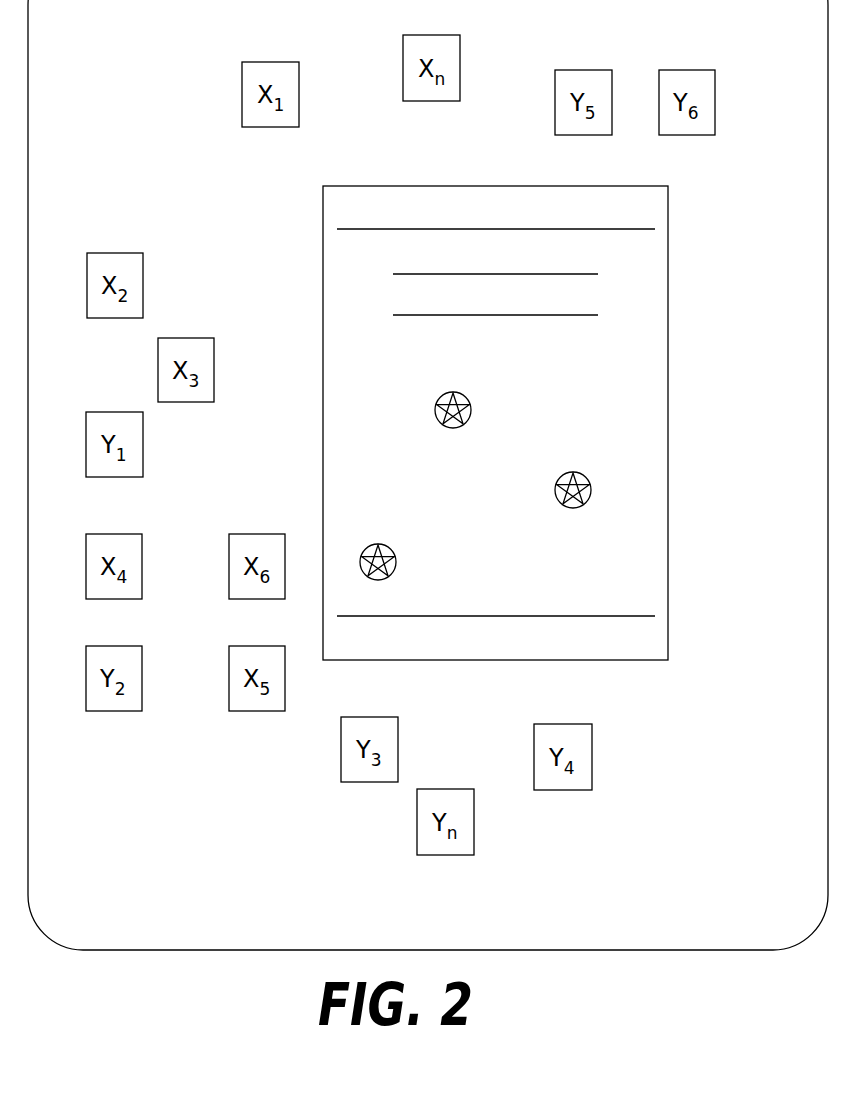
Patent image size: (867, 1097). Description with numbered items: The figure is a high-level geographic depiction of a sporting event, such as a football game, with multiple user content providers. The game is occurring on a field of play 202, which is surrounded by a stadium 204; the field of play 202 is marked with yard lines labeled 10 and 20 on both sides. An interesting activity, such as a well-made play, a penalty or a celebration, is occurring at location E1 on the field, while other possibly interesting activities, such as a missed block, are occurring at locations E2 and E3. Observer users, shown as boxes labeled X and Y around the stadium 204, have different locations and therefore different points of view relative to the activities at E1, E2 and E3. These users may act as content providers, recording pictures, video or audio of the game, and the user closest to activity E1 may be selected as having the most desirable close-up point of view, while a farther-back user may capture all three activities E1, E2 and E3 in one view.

The stadium 204 is at (28, 68).
The field of play 202 is at (323, 322).
The 10 yard line 10 is at (494, 274).
The 20 yard line 20 is at (494, 315).
The activity location E1 is at (395, 554).
The activity location E2 is at (590, 482).
The activity location E3 is at (470, 402).